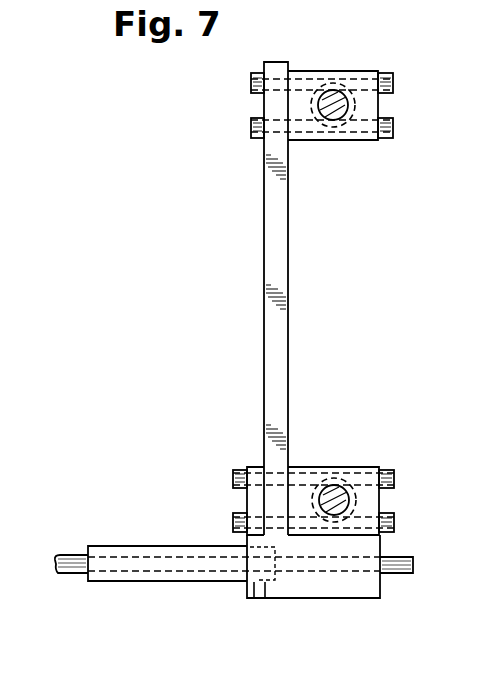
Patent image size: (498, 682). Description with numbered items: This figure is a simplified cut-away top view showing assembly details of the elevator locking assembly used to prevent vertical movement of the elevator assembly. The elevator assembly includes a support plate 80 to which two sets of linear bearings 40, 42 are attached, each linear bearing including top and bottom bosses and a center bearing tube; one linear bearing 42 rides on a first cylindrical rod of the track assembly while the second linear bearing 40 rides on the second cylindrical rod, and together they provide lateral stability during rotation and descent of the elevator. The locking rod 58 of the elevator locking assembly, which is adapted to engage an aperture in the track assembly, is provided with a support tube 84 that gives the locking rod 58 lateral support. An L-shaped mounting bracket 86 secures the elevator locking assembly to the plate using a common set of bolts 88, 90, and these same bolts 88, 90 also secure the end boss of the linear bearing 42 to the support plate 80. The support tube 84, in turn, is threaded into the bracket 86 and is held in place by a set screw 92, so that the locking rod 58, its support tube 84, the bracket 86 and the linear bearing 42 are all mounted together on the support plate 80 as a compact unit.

The linear bearing 40 is at (338, 72).
The linear bearing 42 is at (350, 467).
The locking rod 58 is at (413, 563).
The support plate 80 is at (264, 318).
The support tube 84 is at (165, 581).
The L-shaped mounting bracket 86 is at (370, 598).
The bolt 88 is at (232, 480).
The bolt 90 is at (232, 522).
The set screw 92 is at (258, 600).